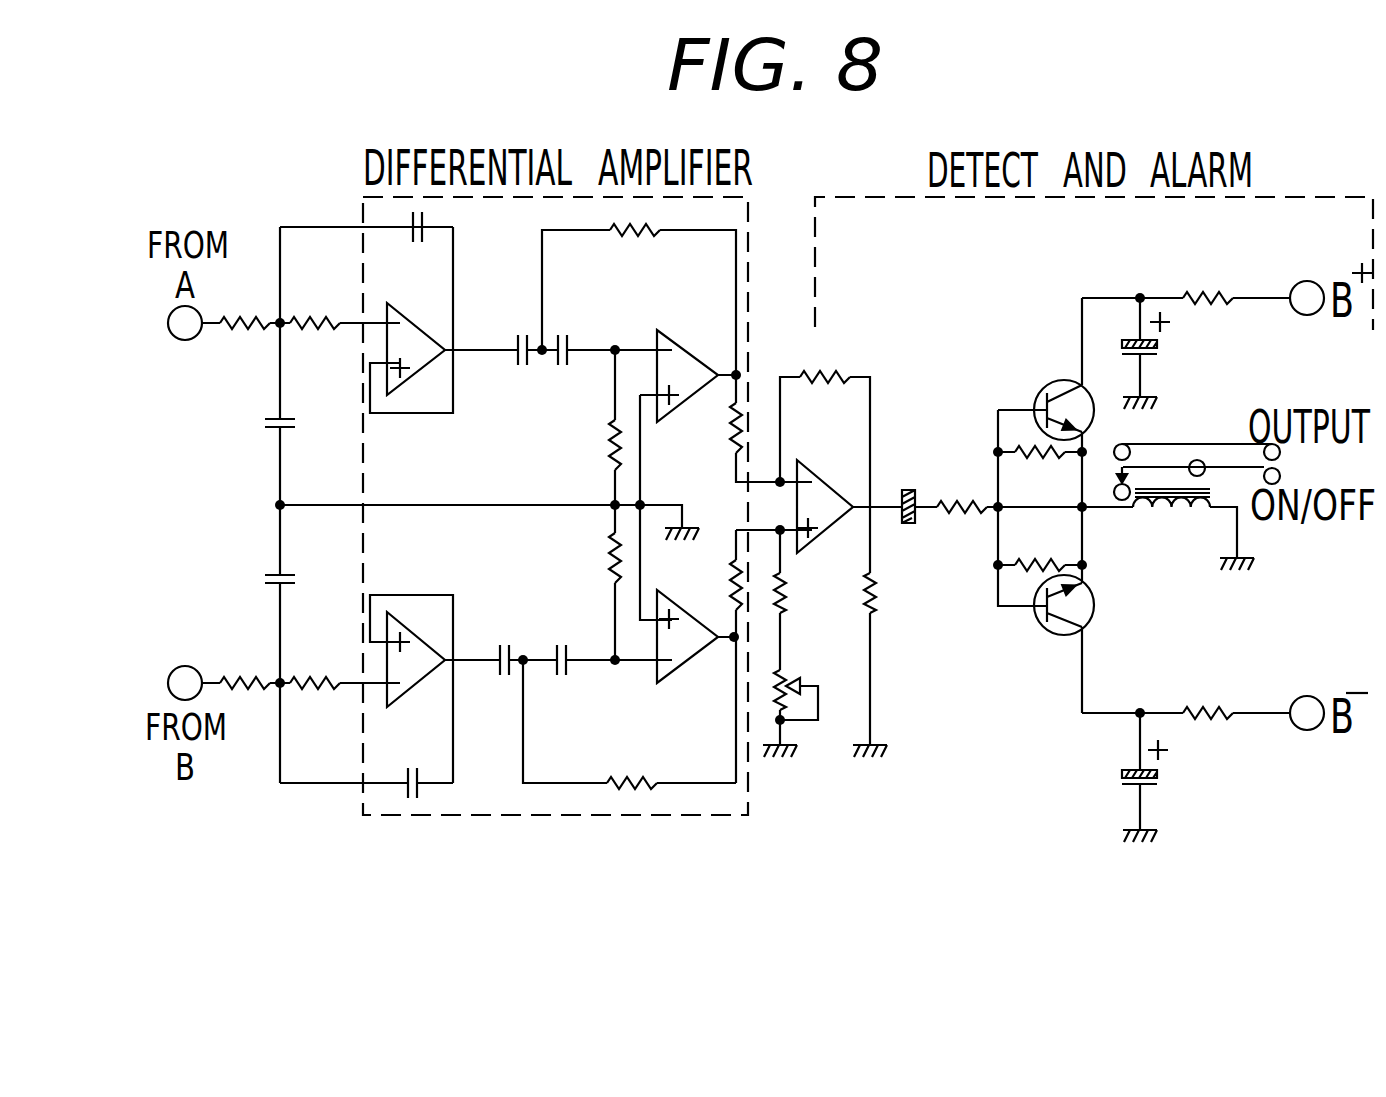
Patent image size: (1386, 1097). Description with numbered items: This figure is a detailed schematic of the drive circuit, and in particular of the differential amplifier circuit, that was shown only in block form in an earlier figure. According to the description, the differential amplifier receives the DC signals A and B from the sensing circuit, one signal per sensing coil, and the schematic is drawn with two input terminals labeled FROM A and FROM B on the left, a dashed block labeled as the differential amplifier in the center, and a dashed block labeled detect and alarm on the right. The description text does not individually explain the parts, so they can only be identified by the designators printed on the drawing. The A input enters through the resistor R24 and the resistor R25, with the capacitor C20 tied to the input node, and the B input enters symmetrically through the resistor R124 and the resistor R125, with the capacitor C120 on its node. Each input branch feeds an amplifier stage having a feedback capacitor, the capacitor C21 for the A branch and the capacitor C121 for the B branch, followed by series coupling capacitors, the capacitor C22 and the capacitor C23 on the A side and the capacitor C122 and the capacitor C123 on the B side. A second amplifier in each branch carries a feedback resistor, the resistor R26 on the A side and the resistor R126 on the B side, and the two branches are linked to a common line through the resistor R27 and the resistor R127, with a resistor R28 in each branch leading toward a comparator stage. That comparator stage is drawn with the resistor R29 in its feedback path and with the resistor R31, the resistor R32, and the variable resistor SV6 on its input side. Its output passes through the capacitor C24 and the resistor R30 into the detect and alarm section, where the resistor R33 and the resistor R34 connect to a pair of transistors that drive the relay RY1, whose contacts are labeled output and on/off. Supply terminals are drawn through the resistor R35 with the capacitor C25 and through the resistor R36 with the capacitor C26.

The resistor R24 is at (241, 348).
The resistor R25 is at (320, 348).
The capacitor C20 is at (250, 424).
The capacitor C21 is at (413, 252).
The capacitor C22 is at (494, 332).
The capacitor C23 is at (592, 332).
The resistor R26 is at (632, 255).
The resistor R27 is at (583, 449).
The resistor R28 is at (704, 506).
The resistor R127 is at (579, 559).
The resistor R29 is at (820, 402).
The capacitor C24 is at (906, 484).
The resistor R30 is at (958, 535).
The resistor R31 is at (812, 596).
The resistor R32 is at (902, 596).
The variable resistor SV6 is at (811, 672).
The resistor R33 is at (1039, 476).
The resistor R34 is at (1039, 544).
The resistor R35 is at (1208, 277).
The resistor R36 is at (1205, 694).
The electrolytic capacitor C25 is at (1171, 345).
The electrolytic capacitor C26 is at (1170, 778).
The relay RY1 is at (1197, 507).
The capacitor C120 is at (240, 587).
The capacitor C121 is at (410, 763).
The capacitor C122 is at (495, 639).
The capacitor C123 is at (572, 685).
The resistor R124 is at (236, 662).
The resistor R125 is at (322, 662).
The resistor R126 is at (630, 760).